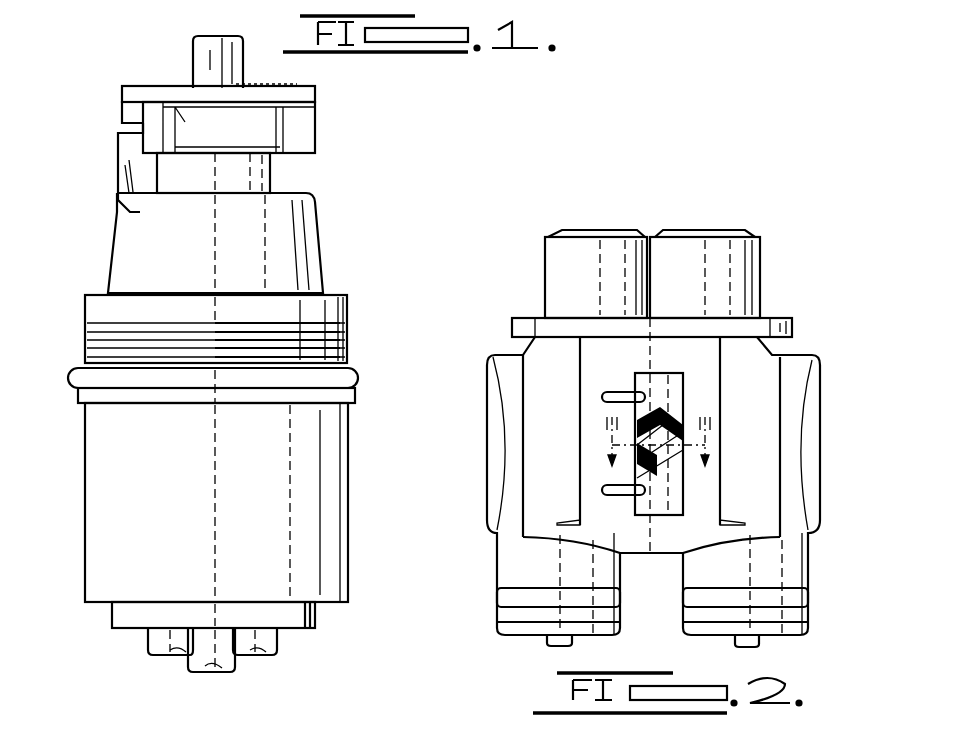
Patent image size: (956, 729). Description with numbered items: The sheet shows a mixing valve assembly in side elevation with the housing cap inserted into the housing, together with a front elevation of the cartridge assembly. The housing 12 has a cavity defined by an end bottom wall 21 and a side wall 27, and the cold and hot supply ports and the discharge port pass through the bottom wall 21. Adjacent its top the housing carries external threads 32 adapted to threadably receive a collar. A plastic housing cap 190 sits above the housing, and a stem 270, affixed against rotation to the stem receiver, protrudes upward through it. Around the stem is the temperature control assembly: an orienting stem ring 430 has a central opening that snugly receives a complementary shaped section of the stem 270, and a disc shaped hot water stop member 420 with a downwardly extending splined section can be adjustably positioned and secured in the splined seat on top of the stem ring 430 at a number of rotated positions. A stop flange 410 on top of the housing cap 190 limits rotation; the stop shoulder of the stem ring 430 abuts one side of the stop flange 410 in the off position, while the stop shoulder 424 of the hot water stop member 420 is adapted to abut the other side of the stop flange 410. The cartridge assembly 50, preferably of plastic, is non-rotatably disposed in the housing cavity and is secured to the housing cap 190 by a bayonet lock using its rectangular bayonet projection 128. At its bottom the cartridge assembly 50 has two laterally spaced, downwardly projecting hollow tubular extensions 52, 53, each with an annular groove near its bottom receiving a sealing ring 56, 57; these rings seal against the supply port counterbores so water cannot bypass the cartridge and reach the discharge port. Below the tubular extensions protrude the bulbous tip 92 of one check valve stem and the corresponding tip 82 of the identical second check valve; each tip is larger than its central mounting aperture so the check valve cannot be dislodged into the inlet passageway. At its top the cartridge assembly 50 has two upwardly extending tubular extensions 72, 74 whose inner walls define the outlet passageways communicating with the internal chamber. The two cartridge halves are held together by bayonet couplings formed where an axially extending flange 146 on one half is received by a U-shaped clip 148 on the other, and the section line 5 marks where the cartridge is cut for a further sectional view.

In FIG. 1, the housing 12 is at (80, 545).
In FIG. 1, the bottom wall 21 is at (100, 604).
In FIG. 1, the side wall 27 is at (100, 470).
In FIG. 1, the external threads 32 is at (92, 343).
In FIG. 1, the housing cap 190 is at (140, 240).
In FIG. 1, the stem 270 is at (200, 58).
In FIG. 1, the stop flange 410 is at (128, 145).
In FIG. 1, the hot water stop member 420 is at (145, 86).
In FIG. 1, the stop shoulder 424 is at (150, 118).
In FIG. 1, the orienting stem ring 430 is at (316, 126).
In FIG. 2, the cartridge assembly 50 is at (837, 356).
In FIG. 2, the tubular extension 52 is at (790, 567).
In FIG. 2, the tubular extension 53 is at (505, 560).
In FIG. 2, the sealing ring 56 is at (807, 600).
In FIG. 2, the sealing ring 57 is at (500, 596).
In FIG. 2, the tubular extension 72 is at (700, 258).
In FIG. 2, the tubular extension 74 is at (583, 257).
In FIG. 2, the right locating nub 82 is at (760, 645).
In FIG. 2, the bulbous tip 92 is at (553, 643).
In FIG. 2, the bayonet projection 128 is at (773, 323).
In FIG. 2, the flange 146 is at (660, 417).
In FIG. 2, the U-shaped clip 148 is at (683, 430).
In FIG. 2, the section line 5- 5 is at (706, 467).